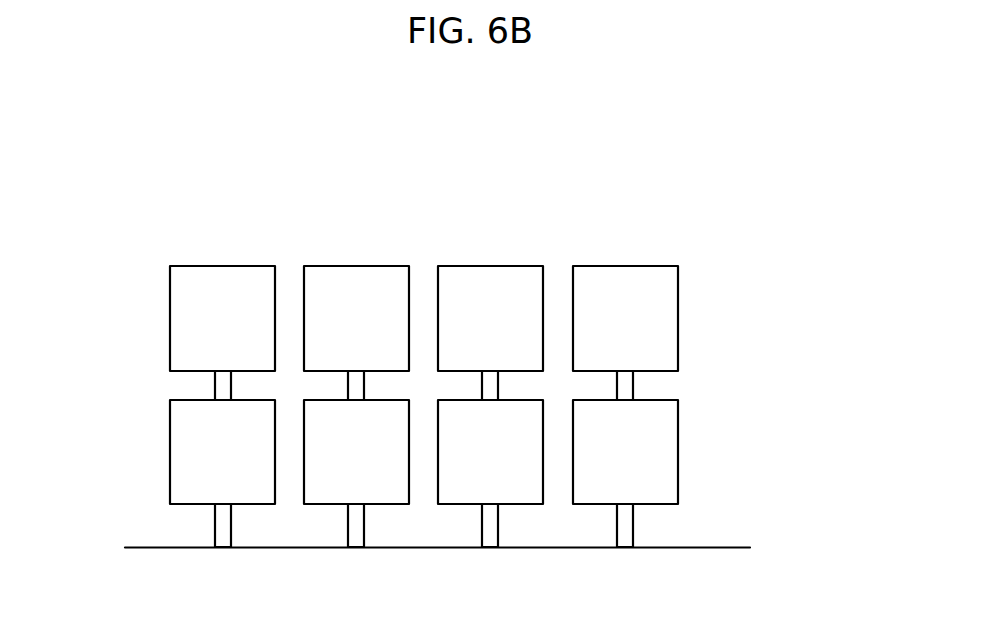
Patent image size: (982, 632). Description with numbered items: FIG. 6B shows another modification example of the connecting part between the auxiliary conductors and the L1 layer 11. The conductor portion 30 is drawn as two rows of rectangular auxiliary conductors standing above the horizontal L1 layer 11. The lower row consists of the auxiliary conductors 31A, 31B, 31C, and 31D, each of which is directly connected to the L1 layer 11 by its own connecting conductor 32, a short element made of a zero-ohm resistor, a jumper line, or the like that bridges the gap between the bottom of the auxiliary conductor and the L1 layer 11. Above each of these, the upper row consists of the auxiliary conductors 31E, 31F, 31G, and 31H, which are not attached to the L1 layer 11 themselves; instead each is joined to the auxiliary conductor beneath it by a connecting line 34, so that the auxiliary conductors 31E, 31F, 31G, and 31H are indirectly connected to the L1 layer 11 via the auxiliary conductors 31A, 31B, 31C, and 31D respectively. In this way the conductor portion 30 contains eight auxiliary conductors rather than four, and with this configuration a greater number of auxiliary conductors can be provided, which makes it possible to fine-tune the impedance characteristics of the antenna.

The conductor portion 30 is at (753, 162).
The L1 layer 11 is at (708, 547).
The auxiliary conductor 31A is at (183, 505).
The auxiliary conductor 31B is at (377, 505).
The auxiliary conductor 31C is at (508, 505).
The auxiliary conductor 31D is at (640, 505).
The auxiliary conductor 31E is at (248, 265).
The auxiliary conductor 31F is at (383, 265).
The auxiliary conductor 31G is at (517, 265).
The auxiliary conductor 31H is at (650, 265).
The connecting conductor 32 is at (231, 513).
The connecting line 34 is at (214, 385).